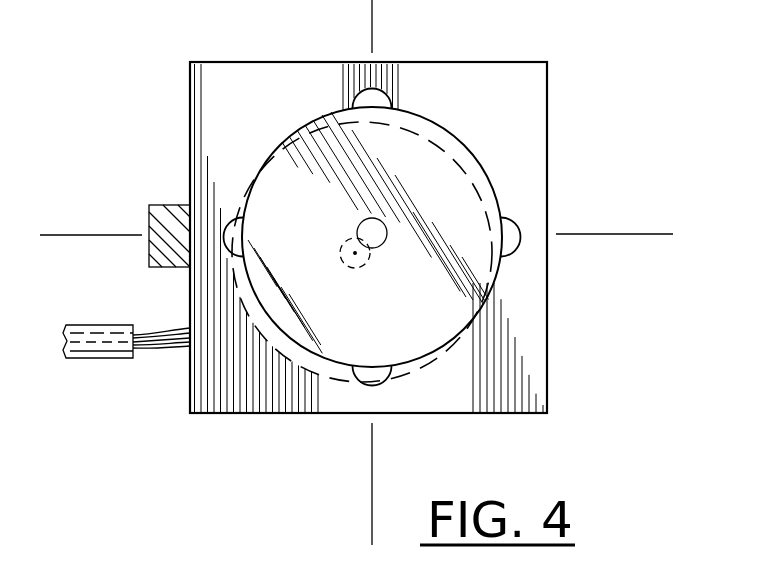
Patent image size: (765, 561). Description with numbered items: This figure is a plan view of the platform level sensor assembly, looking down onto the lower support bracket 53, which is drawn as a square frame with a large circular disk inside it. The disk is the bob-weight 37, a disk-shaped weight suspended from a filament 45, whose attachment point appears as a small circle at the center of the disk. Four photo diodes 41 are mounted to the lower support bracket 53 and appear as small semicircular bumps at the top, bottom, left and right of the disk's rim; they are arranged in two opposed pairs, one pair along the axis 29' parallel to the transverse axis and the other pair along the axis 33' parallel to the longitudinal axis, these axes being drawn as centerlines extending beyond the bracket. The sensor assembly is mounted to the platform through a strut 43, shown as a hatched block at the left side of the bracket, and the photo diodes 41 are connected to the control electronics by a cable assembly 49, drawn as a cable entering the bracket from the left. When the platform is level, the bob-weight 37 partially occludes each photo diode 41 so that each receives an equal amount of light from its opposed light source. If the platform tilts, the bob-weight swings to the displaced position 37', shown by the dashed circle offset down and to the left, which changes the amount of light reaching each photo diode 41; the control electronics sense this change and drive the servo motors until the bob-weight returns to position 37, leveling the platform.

The axis parallel to transverse axis 29' is at (337, 484).
The axis parallel to longitudinal axis 33' is at (91, 202).
The bob-weight 37 is at (431, 237).
The displaced bob-weight position 37' is at (282, 266).
The photo diodes 41 is at (384, 86).
The strut 43 is at (160, 205).
The filament 45 is at (363, 232).
The cable assembly 49 is at (118, 325).
The lower support bracket 53 is at (548, 297).